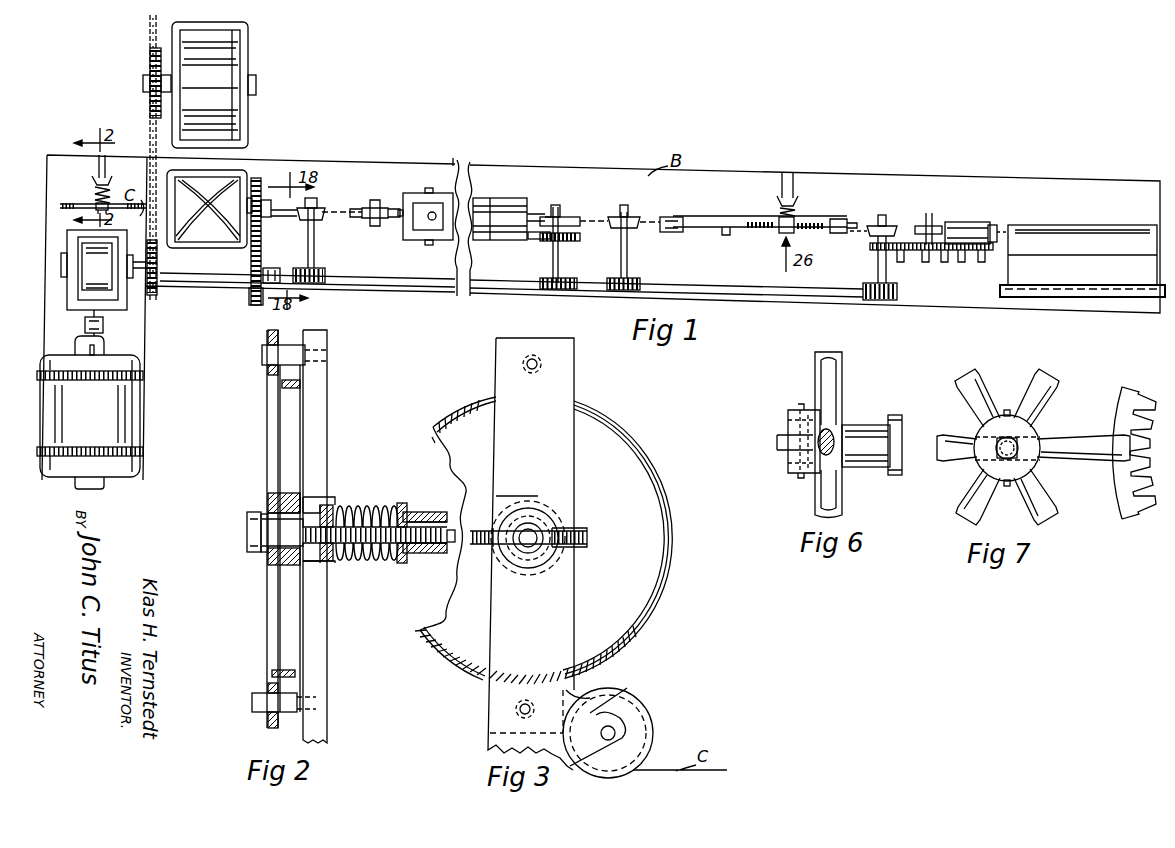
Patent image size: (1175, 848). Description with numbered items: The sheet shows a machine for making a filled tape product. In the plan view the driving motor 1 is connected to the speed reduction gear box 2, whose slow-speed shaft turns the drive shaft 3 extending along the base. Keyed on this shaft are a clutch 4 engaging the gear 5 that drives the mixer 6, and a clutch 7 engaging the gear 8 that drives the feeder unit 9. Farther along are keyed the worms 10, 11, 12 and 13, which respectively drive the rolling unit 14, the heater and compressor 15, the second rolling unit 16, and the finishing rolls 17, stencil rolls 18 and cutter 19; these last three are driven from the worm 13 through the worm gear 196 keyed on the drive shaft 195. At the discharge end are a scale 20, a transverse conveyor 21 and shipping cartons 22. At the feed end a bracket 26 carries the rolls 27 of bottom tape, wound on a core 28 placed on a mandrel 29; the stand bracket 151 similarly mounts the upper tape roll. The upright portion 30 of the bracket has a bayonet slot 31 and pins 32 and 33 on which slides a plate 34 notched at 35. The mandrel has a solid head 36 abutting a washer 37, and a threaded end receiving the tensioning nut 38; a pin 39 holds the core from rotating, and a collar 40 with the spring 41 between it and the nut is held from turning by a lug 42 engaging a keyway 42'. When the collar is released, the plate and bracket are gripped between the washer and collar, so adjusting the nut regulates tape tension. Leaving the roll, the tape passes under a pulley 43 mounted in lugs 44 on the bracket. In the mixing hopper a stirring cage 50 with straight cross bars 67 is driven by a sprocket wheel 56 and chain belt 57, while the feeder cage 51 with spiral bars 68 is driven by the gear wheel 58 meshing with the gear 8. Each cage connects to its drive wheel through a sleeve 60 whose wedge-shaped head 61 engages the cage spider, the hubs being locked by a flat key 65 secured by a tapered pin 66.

In FIG. 1, the driving motor 1 is at (121, 408).
In FIG. 1, the speed reduction gear box 2 is at (105, 311).
In FIG. 1, the drive shaft 3 is at (179, 270).
In FIG. 1, the clutch 4 is at (130, 288).
In FIG. 1, the gear 5 is at (160, 289).
In FIG. 1, the mixer 6 is at (248, 57).
In FIG. 1, the clutch 7 is at (275, 268).
In FIG. 1, the gear 8 is at (251, 298).
In FIG. 1, the feeder unit 9 is at (225, 181).
In FIG. 1, the worm 10 is at (312, 287).
In FIG. 1, the worm 11 is at (554, 290).
In FIG. 1, the worm 12 is at (630, 282).
In FIG. 1, the worm 13 is at (872, 287).
In FIG. 1, the rolling unit 14 is at (321, 207).
In FIG. 1, the heater and compressor 15 is at (490, 203).
In FIG. 1, the second rolling unit 16 is at (628, 222).
In FIG. 1, the finishing rolls 17 is at (880, 226).
In FIG. 1, the stencil rolls 18 is at (926, 222).
In FIG. 1, the cutter 19 is at (951, 229).
In FIG. 1, the scale 20 is at (1013, 274).
In FIG. 1, the transverse conveyor 21 is at (1062, 233).
In FIG. 1, the shipping cartons 22 is at (1000, 291).
In FIG. 1, the bracket 26 is at (95, 168).
In FIG. 1, the rolls of bottom tape 27 is at (60, 206).
In FIG. 2, the rolls of bottom tape 27 is at (290, 404).
In FIG. 3, the rolls of bottom tape 27 is at (622, 438).
In FIG. 2, the core 28 is at (283, 559).
In FIG. 2, the mandrel 29 is at (266, 524).
In FIG. 3, the mandrel 29 is at (545, 548).
In FIG. 2, the upright portion of the bracket 30 is at (318, 421).
In FIG. 3, the upright portion of the bracket 30 is at (493, 698).
In FIG. 2, the bayonet slot 31 is at (314, 494).
In FIG. 3, the bayonet slot 31 is at (508, 497).
In FIG. 2, the pin 32 is at (262, 356).
In FIG. 3, the pin 32 is at (541, 364).
In FIG. 2, the pin 33 is at (253, 704).
In FIG. 3, the pin 33 is at (527, 702).
In FIG. 2, the plate 34 is at (272, 441).
In FIG. 3, the plate 34 is at (488, 727).
In FIG. 2, the notch 35 is at (275, 497).
In FIG. 2, the solid head 36 is at (250, 541).
In FIG. 2, the washer 37 is at (260, 559).
In FIG. 2, the tensioning nut 38 is at (412, 551).
In FIG. 3, the tensioning nut 38 is at (567, 537).
In FIG. 2, the pin 39 is at (288, 513).
In FIG. 2, the collar 40 is at (328, 504).
In FIG. 2, the spring 41 is at (334, 556).
In FIG. 2, the lug 42 is at (367, 519).
In FIG. 2, the keyway 42' is at (388, 522).
In FIG. 3, the pulley 43 is at (635, 713).
In FIG. 3, the lugs 44 is at (595, 712).
In FIG. 1, the stirring cage 50 is at (213, 62).
In FIG. 1, the cage 51 is at (238, 199).
In FIG. 1, the sprocket wheel 56 is at (150, 57).
In FIG. 1, the chain belt 57 is at (154, 140).
In FIG. 1, the gear wheel 58 is at (259, 188).
In FIG. 6, the gear wheel 58 is at (842, 364).
In FIG. 7, the gear wheel 58 is at (1127, 428).
In FIG. 6, the sleeve 60 is at (846, 430).
In FIG. 6, the wedge-shaped head 61 is at (897, 433).
In FIG. 7, the wedge-shaped head 61 is at (1016, 425).
In FIG. 6, the flat key 65 is at (777, 442).
In FIG. 7, the flat key 65 is at (1016, 452).
In FIG. 6, the tapered pin 66 is at (805, 412).
In FIG. 7, the tapered pin 66 is at (1010, 410).
In FIG. 1, the cross bars 67 is at (217, 104).
In FIG. 1, the bars 68 is at (207, 210).
In FIG. 1, the stand bracket 151 is at (797, 190).
In FIG. 1, the drive shaft 195 is at (877, 270).
In FIG. 1, the worm gear 196 is at (898, 292).